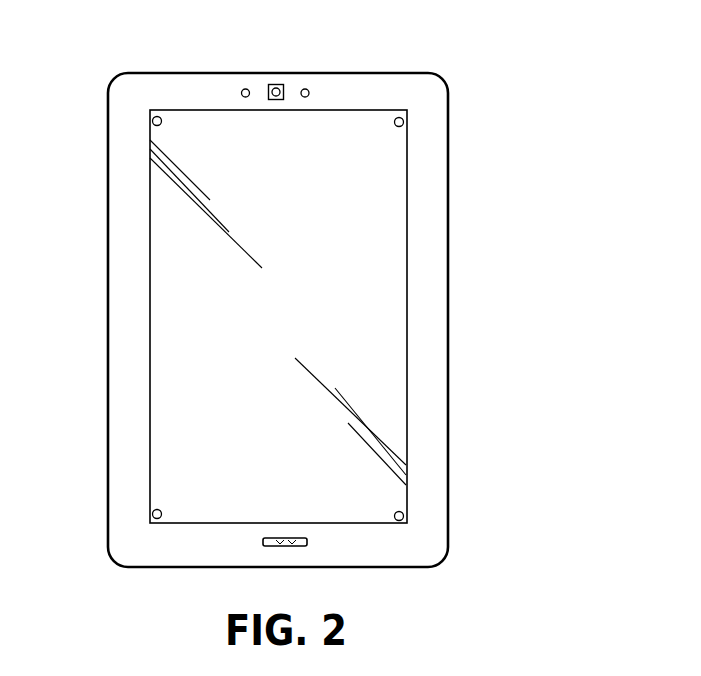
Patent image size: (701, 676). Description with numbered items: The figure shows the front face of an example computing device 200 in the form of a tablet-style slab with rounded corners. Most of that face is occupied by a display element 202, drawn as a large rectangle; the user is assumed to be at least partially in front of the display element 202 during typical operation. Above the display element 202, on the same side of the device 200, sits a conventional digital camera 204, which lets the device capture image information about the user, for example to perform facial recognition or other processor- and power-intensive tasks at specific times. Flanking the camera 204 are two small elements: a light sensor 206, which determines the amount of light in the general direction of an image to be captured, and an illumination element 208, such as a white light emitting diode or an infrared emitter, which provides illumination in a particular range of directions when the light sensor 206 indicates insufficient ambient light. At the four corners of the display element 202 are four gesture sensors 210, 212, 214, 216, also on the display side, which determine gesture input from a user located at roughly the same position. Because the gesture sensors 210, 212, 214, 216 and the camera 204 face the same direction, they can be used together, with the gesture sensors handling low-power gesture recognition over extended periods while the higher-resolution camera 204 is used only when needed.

The computing device 200 is at (591, 128).
The display element 202 is at (150, 293).
The digital camera 204 is at (272, 84).
The light sensor 206 is at (309, 90).
The illumination element 208 is at (242, 90).
The gesture sensor 210 is at (152, 121).
The gesture sensor 212 is at (404, 122).
The gesture sensor 214 is at (152, 514).
The gesture sensor 216 is at (404, 518).